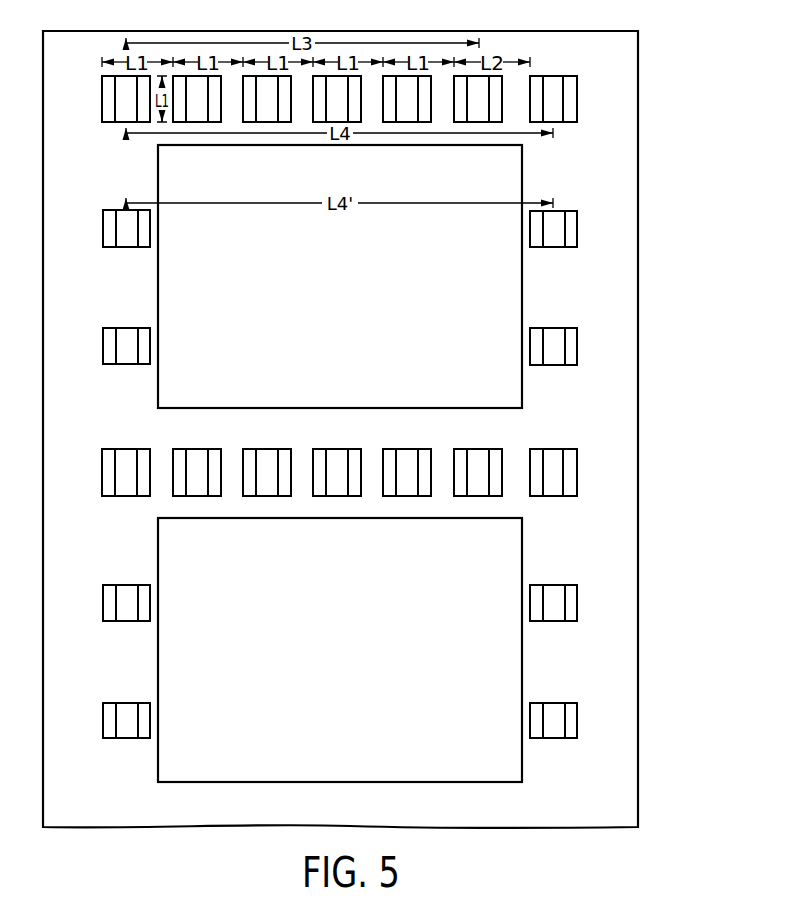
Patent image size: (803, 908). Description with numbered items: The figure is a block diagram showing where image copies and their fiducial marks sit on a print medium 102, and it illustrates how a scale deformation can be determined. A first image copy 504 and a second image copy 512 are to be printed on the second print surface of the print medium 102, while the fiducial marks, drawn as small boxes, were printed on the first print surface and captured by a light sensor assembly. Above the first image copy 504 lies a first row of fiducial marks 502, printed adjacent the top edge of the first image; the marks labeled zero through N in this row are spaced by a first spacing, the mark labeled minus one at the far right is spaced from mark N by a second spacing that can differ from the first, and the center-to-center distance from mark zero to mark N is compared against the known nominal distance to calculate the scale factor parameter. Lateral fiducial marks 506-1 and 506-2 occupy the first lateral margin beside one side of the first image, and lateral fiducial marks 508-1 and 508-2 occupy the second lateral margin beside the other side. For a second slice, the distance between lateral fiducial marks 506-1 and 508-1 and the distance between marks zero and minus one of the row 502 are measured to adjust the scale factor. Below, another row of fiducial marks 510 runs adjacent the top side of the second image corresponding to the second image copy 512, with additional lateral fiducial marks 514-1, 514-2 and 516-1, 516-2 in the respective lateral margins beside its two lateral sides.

The print medium 102 is at (640, 427).
The first row of fiducial marks 502 is at (585, 70).
The first image copy 504 is at (522, 295).
The lateral fiducial mark 506-1 is at (126, 249).
The lateral fiducial mark 506-2 is at (126, 366).
The lateral fiducial mark 508-1 is at (553, 249).
The lateral fiducial mark 508-2 is at (553, 367).
The row of fiducial marks 510 is at (585, 445).
The second image copy 512 is at (522, 670).
The lateral fiducial mark 514-1 is at (126, 623).
The lateral fiducial mark 514-2 is at (126, 740).
The lateral fiducial mark 516-1 is at (553, 623).
The lateral fiducial mark 516-2 is at (553, 740).